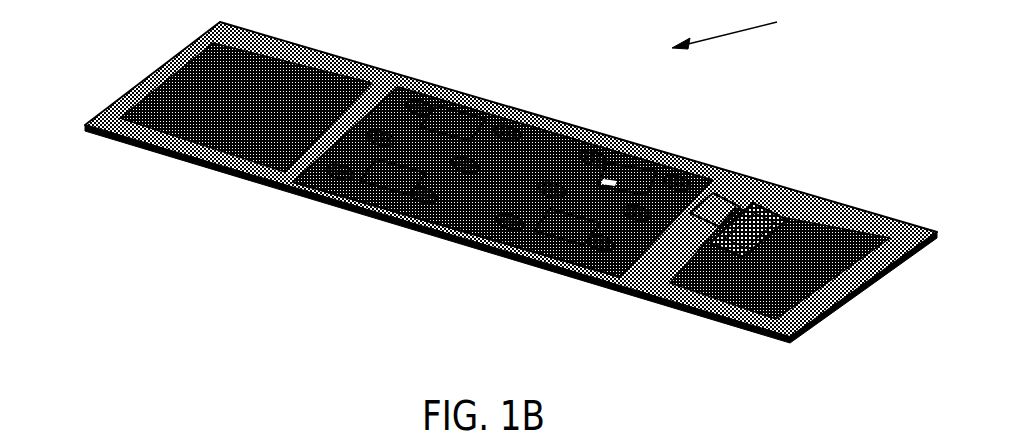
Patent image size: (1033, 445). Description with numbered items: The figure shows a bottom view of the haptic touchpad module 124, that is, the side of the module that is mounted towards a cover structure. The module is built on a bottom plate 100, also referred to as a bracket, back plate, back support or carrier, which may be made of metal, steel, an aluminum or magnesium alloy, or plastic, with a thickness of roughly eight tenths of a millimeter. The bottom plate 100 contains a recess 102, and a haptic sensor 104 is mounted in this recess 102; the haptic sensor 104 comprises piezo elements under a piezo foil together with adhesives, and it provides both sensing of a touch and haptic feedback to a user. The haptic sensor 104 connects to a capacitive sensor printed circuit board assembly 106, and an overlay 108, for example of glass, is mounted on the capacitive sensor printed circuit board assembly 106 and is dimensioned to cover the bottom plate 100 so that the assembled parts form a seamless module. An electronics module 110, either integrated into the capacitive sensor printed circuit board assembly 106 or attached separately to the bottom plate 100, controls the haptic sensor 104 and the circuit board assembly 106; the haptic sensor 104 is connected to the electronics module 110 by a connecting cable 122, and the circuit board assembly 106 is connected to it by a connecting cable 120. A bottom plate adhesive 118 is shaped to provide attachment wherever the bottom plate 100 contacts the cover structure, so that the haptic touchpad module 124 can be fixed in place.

The bottom plate 100 is at (253, 145).
The recess 102 is at (326, 191).
The haptic sensor 104 is at (594, 242).
The capacitive sensor printed circuit board assembly 106 is at (460, 113).
The overlay 108 is at (153, 147).
The electronics module 110 is at (770, 207).
The bottom plate adhesive 118 is at (398, 75).
The connecting cable 120 is at (658, 178).
The connecting cable 122 is at (710, 198).
The haptic touchpad module 124 is at (746, 29).